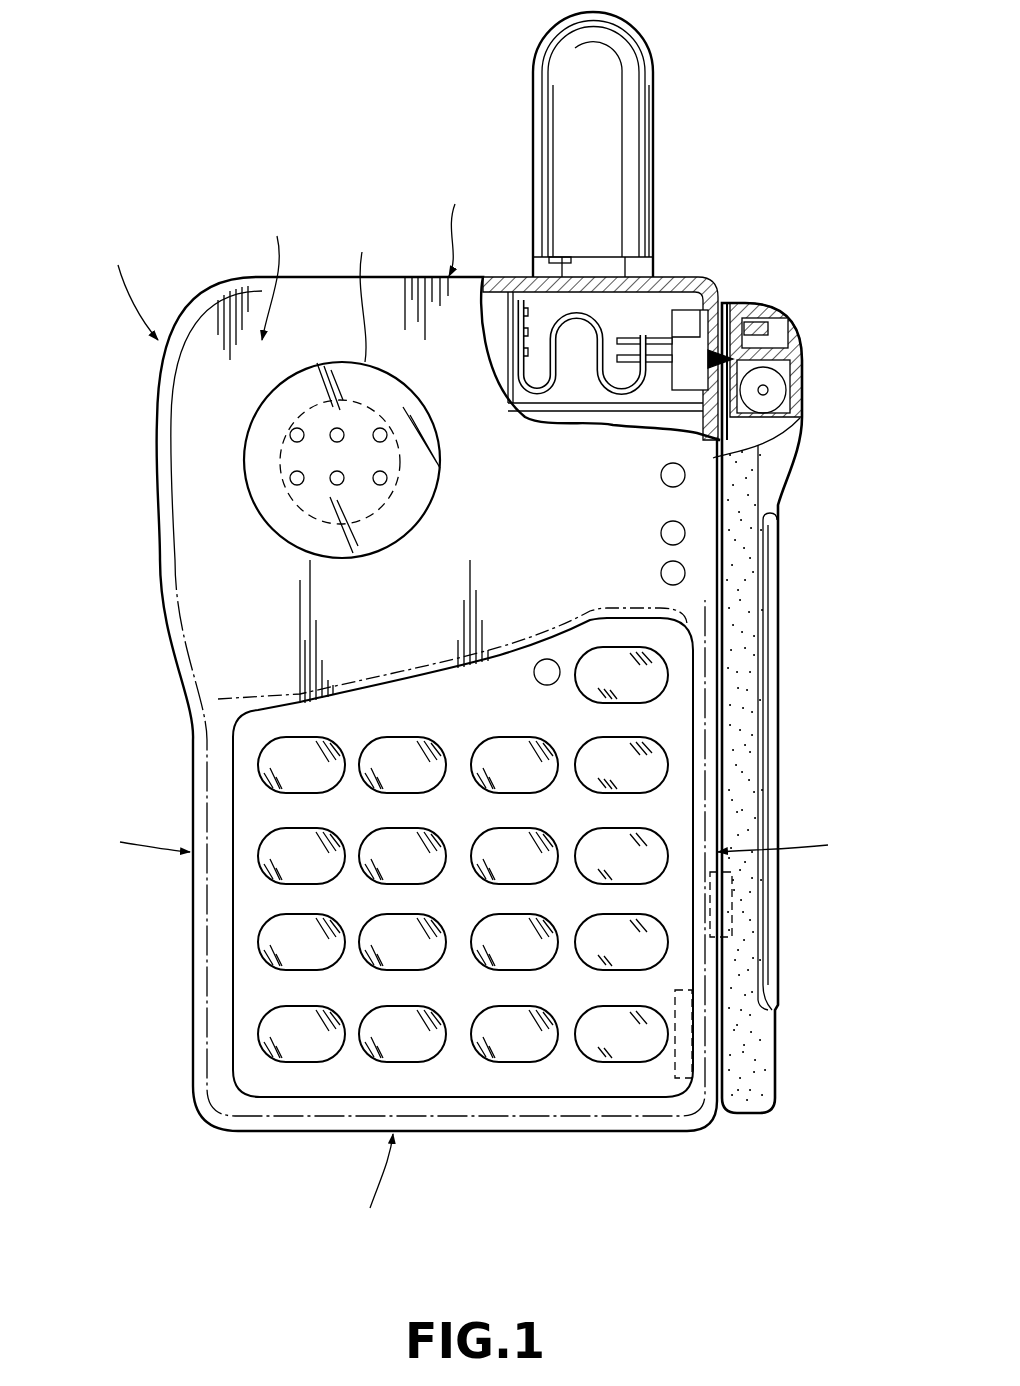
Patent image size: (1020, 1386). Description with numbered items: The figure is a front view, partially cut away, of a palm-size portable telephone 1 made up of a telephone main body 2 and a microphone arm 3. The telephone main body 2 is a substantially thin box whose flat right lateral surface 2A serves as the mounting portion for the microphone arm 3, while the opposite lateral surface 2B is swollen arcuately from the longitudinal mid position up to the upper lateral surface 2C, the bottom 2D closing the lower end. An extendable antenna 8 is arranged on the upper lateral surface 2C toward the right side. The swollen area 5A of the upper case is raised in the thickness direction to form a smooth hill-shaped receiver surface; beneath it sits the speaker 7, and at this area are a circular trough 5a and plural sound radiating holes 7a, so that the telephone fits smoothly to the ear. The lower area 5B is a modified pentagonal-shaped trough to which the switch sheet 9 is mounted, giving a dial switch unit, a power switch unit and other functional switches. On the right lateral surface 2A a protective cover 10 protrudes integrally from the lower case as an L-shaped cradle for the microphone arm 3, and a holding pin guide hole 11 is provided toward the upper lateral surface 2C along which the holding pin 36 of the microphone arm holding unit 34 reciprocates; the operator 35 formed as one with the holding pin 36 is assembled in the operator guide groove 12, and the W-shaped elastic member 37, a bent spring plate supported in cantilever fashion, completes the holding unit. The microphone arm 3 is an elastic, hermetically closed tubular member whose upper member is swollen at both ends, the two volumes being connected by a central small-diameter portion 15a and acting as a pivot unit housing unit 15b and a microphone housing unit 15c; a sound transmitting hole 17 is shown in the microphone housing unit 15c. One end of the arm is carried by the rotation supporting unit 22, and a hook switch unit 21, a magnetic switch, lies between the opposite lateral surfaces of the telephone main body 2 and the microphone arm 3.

The portable telephone 1 is at (103, 259).
The telephone main body 2 is at (215, 1022).
The lateral surface 2A is at (797, 837).
The lateral surface 2B is at (133, 839).
The upper lateral surface 2C is at (456, 222).
The bottom 2D is at (369, 1188).
The microphone arm 3 is at (743, 690).
The swollen area 5A is at (277, 270).
The lower area 5B is at (446, 1092).
The circular trough 5a is at (367, 288).
The speaker 7 is at (278, 468).
The sound radiating holes 7a is at (290, 432).
The extendable antenna 8 is at (655, 81).
The switch sheet 9 is at (280, 1078).
The protective cover 10 is at (781, 608).
The holding pin guide hole 11 is at (745, 303).
The operator guide groove 12 is at (690, 300).
The central small-diameter portion 15a is at (757, 768).
The pivot unit housing unit 15b is at (778, 1050).
The microphone housing unit 15c is at (801, 342).
The lock member 17 is at (775, 393).
The hook switch unit 21 is at (733, 915).
The rotation supporting unit 22 is at (678, 1084).
The microphone arm holding unit 34 is at (648, 312).
The operator 35 is at (713, 458).
The holding pin 36 is at (693, 362).
The elastic member 37 is at (580, 330).